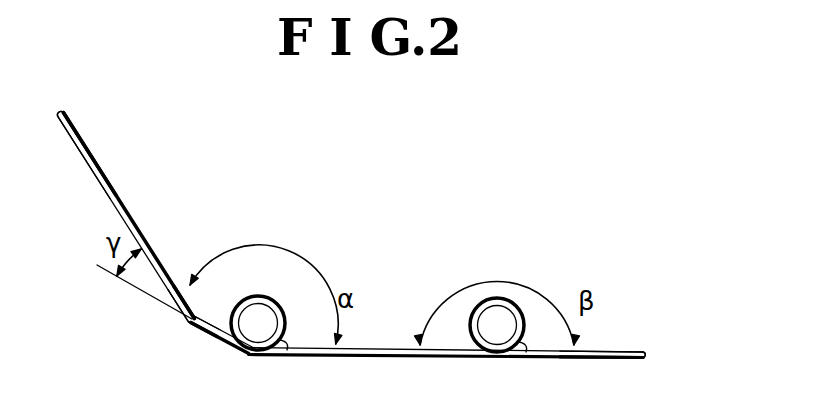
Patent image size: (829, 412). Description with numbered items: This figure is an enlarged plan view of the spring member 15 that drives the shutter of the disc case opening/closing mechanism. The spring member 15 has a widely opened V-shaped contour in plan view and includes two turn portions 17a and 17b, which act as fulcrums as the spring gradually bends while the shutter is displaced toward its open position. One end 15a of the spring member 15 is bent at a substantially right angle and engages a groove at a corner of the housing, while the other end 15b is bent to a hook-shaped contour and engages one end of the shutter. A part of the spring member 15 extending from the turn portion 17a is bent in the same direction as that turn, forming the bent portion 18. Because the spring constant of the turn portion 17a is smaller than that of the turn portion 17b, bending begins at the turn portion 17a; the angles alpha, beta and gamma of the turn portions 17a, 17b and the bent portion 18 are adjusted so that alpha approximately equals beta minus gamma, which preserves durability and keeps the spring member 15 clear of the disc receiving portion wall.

The spring member 15 is at (463, 222).
The one end of the spring member 15a is at (63, 108).
The other end of the spring member 15b is at (645, 356).
The turn portion 17a is at (283, 346).
The turn portion 17b is at (521, 347).
The bent portion 18 is at (190, 324).